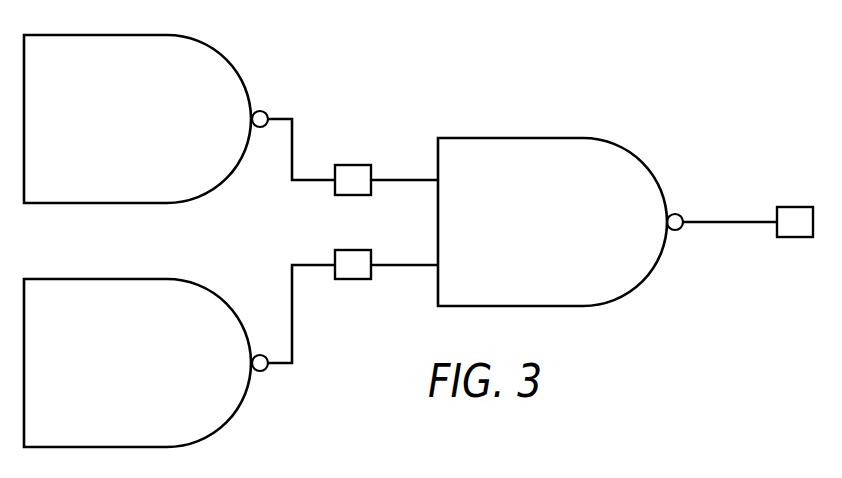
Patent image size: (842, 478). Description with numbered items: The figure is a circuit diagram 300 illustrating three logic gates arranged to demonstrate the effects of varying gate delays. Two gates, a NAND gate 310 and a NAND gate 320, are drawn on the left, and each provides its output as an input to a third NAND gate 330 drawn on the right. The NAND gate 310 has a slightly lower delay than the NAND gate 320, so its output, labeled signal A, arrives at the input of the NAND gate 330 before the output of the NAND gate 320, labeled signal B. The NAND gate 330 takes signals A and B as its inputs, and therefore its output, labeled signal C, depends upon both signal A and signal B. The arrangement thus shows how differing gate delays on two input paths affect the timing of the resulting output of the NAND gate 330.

The circuit diagram 300 is at (380, 82).
The NAND gate 310 is at (135, 146).
The NAND gate 320 is at (140, 390).
The NAND gate 330 is at (558, 266).